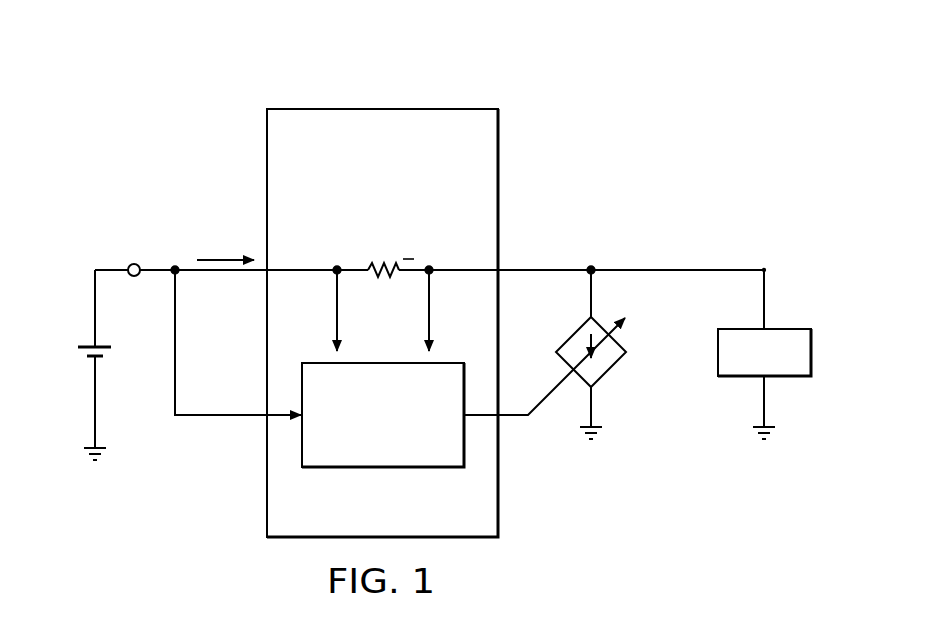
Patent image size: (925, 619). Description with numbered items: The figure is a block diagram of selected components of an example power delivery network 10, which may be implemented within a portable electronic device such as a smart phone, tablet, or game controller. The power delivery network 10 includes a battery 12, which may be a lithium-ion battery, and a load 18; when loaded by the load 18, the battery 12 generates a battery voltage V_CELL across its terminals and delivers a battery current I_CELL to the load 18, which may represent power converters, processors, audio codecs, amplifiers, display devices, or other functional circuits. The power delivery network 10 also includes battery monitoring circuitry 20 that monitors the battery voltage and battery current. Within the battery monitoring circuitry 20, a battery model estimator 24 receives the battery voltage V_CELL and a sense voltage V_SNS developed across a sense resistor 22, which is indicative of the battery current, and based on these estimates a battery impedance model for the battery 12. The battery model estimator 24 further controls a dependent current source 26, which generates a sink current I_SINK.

The power delivery network 10 is at (548, 72).
The battery 12 is at (78, 352).
The load 18 is at (812, 352).
The battery monitoring circuitry 20 is at (311, 106).
The sense resistor 22 is at (383, 277).
The battery model estimator 24 is at (383, 470).
The dependent current source 26 is at (608, 370).